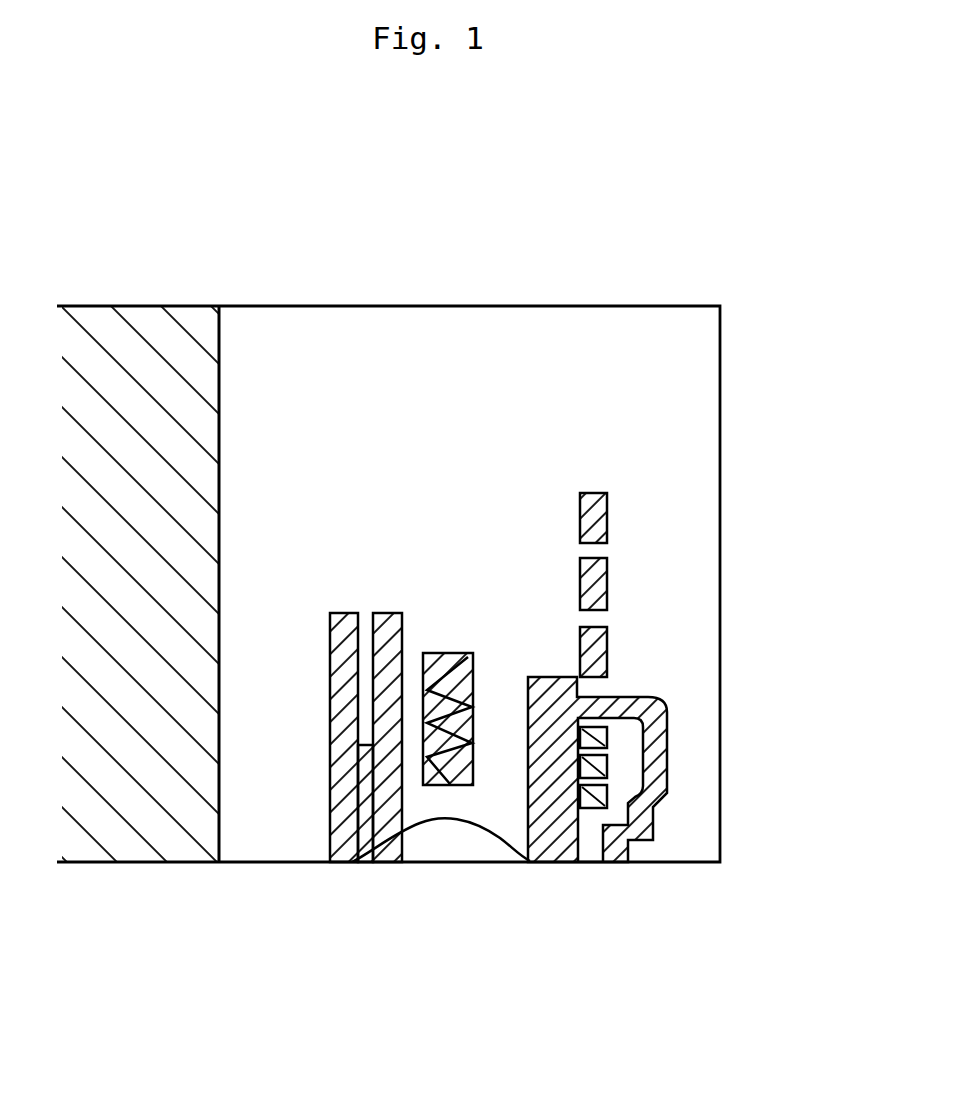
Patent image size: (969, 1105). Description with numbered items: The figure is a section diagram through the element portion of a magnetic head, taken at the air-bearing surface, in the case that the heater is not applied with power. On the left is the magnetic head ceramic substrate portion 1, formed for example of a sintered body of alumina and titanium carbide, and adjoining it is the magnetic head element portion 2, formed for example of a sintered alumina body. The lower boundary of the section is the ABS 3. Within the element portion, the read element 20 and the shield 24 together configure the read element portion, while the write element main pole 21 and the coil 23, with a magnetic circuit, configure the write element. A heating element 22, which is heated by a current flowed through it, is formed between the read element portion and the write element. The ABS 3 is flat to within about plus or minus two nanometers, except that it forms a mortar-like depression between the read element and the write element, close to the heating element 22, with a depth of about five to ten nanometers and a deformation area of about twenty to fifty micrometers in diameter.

The magnetic head ceramic substrate portion 1 is at (133, 340).
The magnetic head element portion 2 is at (297, 345).
The air-bearing surface (ABS) 3 is at (456, 832).
The read element 20 is at (302, 814).
The write element main pole 21 is at (617, 862).
The heating element 22 is at (470, 653).
The coil 23 is at (607, 583).
The shield 24 is at (348, 786).